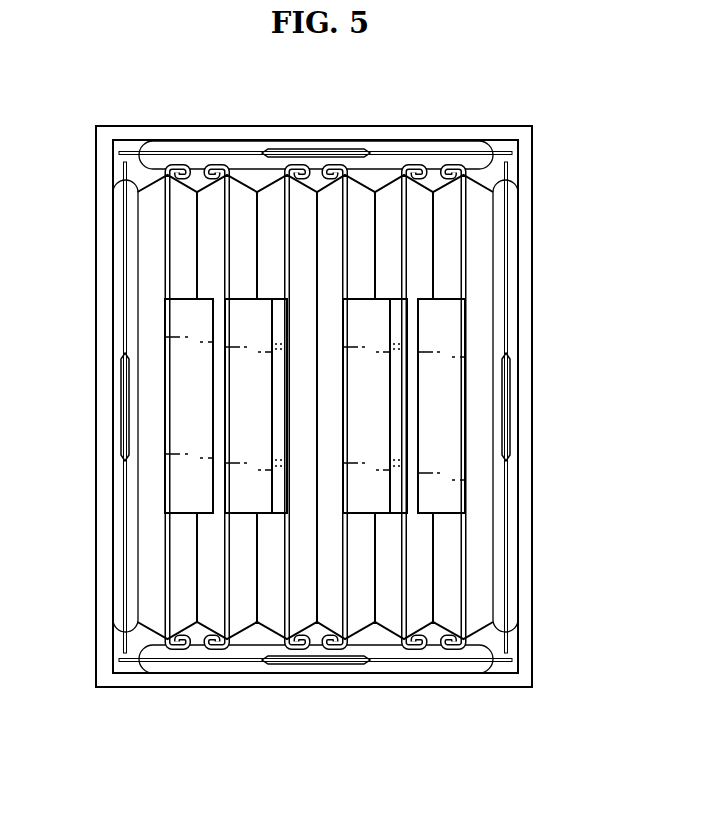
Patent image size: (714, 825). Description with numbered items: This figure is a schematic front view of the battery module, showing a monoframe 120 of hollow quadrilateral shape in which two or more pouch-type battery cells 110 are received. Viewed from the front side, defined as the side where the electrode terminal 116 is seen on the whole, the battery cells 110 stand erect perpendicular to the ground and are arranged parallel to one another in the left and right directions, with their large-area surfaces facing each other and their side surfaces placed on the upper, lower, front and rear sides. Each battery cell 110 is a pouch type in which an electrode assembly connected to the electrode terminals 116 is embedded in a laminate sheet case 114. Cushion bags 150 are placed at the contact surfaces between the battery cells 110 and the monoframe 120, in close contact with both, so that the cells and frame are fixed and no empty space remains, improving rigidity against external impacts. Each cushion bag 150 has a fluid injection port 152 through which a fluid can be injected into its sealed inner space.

The pouch-type battery cell 110 is at (374, 182).
The laminate sheet case 114 is at (477, 215).
The electrode terminal 116 is at (445, 432).
The monoframe 120 is at (533, 495).
The cushion bag 150 is at (215, 148).
The fluid injection port 152 is at (292, 147).